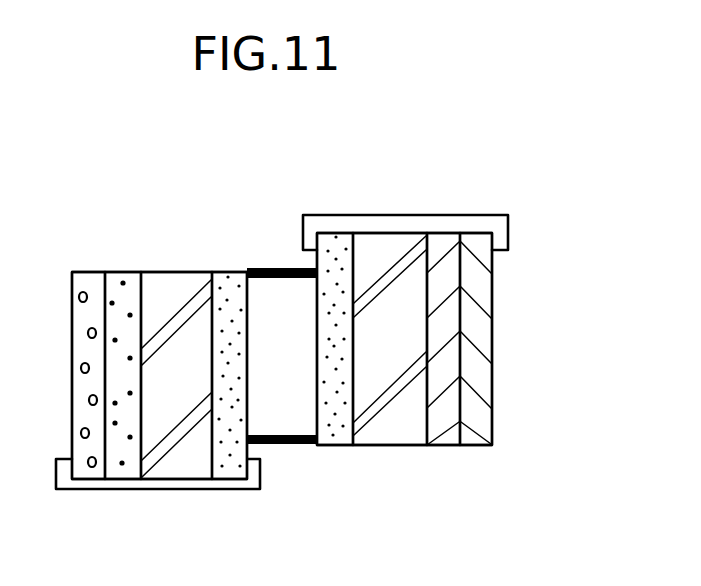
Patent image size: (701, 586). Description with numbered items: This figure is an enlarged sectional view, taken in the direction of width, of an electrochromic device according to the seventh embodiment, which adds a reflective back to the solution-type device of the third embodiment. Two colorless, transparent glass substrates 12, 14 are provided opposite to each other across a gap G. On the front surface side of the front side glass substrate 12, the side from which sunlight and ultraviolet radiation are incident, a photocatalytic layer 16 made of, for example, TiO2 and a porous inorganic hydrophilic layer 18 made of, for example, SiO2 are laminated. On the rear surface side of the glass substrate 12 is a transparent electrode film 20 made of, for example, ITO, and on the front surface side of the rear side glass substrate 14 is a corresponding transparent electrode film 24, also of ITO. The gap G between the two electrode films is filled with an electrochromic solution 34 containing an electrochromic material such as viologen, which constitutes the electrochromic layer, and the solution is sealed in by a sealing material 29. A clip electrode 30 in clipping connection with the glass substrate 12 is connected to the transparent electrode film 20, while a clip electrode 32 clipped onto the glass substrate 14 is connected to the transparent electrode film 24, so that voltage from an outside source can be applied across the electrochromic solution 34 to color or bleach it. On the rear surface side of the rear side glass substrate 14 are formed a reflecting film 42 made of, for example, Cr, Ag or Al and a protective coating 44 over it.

The front side glass substrate 12 is at (165, 270).
The rear side glass substrate 14 is at (402, 446).
The photocatalytic layer 16 is at (118, 270).
The porous inorganic hydrophilic layer 18 is at (87, 270).
The transparent electrode film 20 is at (227, 270).
The transparent electrode film 24 is at (343, 446).
The sealing material 29 is at (262, 268).
The clip electrode 30 is at (168, 490).
The clip electrode 32 is at (468, 225).
The electrochromic solution 34 is at (293, 444).
The reflecting film 42 is at (447, 437).
The protective coating 44 is at (483, 343).
The gap G is at (285, 318).